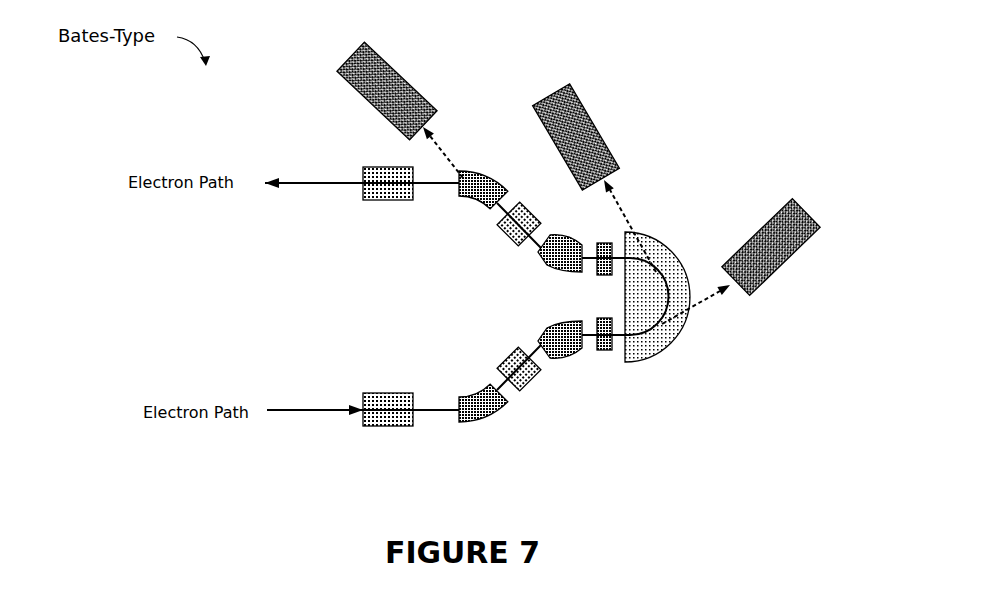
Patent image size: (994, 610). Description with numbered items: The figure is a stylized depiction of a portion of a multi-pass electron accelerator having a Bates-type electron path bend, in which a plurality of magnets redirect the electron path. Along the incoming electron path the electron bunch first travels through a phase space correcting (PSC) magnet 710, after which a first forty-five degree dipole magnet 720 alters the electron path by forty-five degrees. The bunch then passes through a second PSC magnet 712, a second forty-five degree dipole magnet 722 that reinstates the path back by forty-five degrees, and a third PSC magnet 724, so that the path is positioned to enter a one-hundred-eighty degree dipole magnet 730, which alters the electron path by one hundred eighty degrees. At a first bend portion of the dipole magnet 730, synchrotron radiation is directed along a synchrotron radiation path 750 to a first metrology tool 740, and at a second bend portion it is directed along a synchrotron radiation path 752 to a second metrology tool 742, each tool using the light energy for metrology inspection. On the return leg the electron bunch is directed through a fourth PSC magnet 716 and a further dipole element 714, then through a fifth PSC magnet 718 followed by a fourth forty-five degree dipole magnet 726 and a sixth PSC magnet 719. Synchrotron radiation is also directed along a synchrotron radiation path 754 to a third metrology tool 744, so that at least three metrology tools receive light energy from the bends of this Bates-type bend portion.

The phase space correcting magnet 710 is at (397, 428).
The second PSC magnet 712 is at (537, 382).
The aperture 714 is at (605, 318).
The fourth PSC magnet 716 is at (605, 277).
The fifth PSC magnet 718 is at (505, 237).
The sixth PSC magnet 719 is at (397, 201).
The first 45° dipole magnet 720 is at (485, 423).
The second 45° dipole magnet 722 is at (558, 355).
The third PSC magnet 724 is at (548, 272).
The fourth 45° dipole magnet 726 is at (462, 205).
The 180° dipole magnet 730 is at (650, 357).
The first metrology tool 740 is at (767, 218).
The second metrology tool 742 is at (578, 98).
The third metrology tool 744 is at (388, 56).
The synchrotron radiation path 750 is at (705, 297).
The synchrotron radiation path 752 is at (620, 205).
The synchrotron radiation path 754 is at (448, 147).